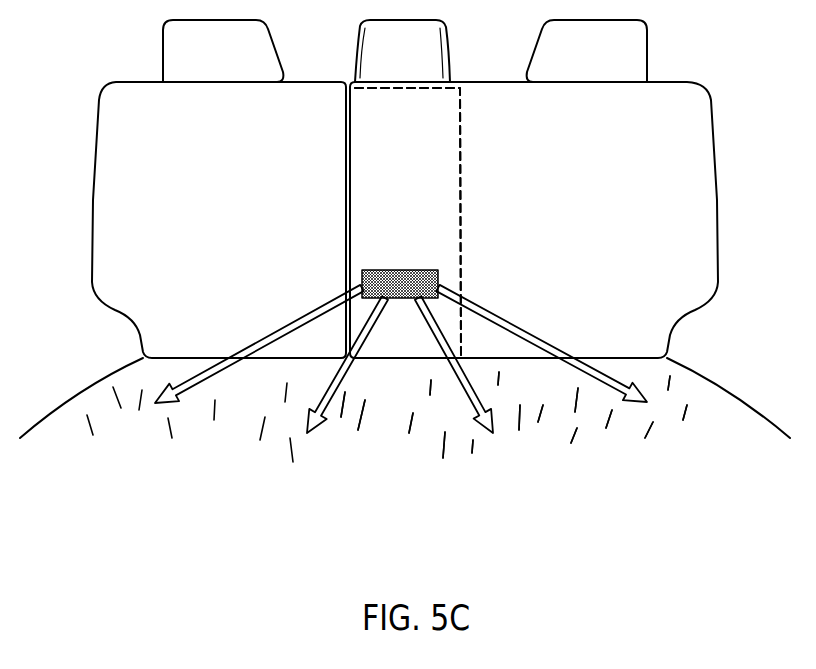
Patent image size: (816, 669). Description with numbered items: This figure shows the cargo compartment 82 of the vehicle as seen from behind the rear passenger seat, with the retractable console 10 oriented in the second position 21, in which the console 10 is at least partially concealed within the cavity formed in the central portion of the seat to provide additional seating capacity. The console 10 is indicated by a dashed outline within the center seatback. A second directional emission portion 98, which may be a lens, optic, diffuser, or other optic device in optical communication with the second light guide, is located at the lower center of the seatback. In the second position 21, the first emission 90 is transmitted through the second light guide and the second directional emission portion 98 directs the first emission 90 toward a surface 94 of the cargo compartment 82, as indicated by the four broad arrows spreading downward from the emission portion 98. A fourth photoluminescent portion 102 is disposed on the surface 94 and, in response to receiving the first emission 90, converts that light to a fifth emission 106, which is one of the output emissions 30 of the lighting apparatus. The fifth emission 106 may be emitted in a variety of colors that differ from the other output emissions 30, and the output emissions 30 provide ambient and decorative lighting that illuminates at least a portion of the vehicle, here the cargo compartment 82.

The retractable console 10 is at (430, 112).
The second position 21 is at (408, 221).
The cargo compartment 82 is at (748, 186).
The first emission 90 is at (298, 300).
The surface 94 is at (712, 407).
The second directional emission portion 98 is at (405, 268).
The fourth photoluminescent portion 102 is at (247, 421).
The output emissions 30 is at (440, 437).
The fifth emission 106 is at (514, 415).